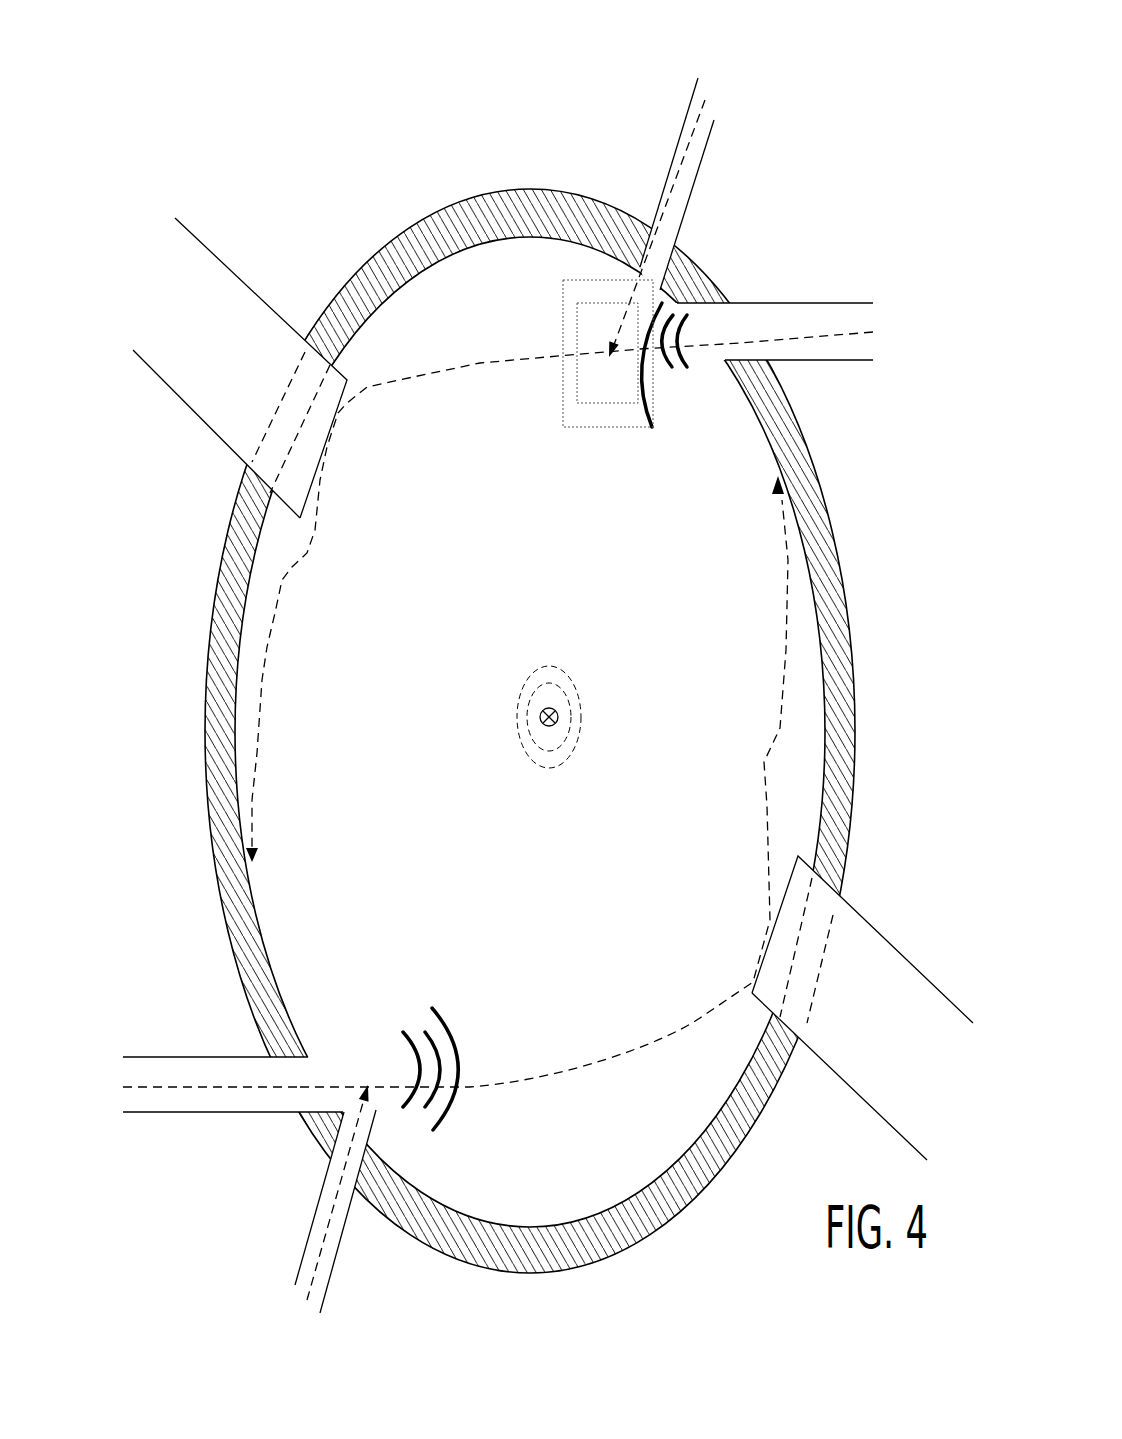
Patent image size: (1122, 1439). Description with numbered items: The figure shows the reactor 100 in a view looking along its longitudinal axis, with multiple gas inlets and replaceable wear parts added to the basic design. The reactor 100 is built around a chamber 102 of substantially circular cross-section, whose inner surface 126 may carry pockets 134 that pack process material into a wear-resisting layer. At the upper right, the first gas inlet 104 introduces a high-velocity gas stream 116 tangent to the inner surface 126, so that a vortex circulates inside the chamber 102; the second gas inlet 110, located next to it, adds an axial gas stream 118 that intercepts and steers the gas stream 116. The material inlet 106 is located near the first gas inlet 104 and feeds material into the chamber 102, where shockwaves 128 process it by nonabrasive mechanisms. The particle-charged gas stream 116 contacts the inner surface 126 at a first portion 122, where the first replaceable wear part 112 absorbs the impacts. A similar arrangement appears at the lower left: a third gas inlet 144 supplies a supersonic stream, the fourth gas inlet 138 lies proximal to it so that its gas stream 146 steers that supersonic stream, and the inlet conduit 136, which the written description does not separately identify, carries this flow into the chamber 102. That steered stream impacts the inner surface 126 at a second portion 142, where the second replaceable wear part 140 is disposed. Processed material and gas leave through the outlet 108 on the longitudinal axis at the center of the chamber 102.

The reactor 100 is at (526, 681).
The chamber 102 is at (564, 731).
The first gas inlet 104 is at (838, 303).
The material inlet 106 is at (612, 427).
The outlet 108 is at (558, 717).
The second gas inlet 110 is at (718, 125).
The first replaceable wear part 112 is at (183, 380).
The gas stream 116 is at (877, 333).
The gas stream 118 is at (690, 181).
The first portion 122 is at (240, 364).
The inner surface 126 is at (690, 1035).
The shockwaves 128 is at (670, 370).
The pockets 134 is at (838, 672).
The conduit 136 is at (212, 1098).
The fourth gas inlet 138 is at (303, 1221).
The second replaceable wear part 140 is at (853, 1047).
The second portion 142 is at (862, 1008).
The third gas inlet 144 is at (123, 1087).
The gas stream 146 is at (307, 1302).